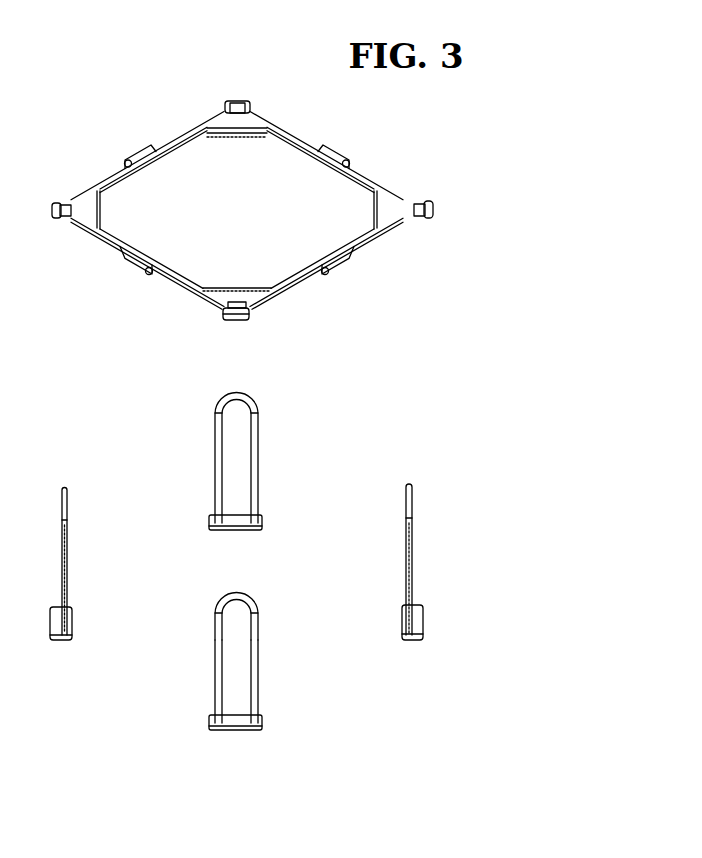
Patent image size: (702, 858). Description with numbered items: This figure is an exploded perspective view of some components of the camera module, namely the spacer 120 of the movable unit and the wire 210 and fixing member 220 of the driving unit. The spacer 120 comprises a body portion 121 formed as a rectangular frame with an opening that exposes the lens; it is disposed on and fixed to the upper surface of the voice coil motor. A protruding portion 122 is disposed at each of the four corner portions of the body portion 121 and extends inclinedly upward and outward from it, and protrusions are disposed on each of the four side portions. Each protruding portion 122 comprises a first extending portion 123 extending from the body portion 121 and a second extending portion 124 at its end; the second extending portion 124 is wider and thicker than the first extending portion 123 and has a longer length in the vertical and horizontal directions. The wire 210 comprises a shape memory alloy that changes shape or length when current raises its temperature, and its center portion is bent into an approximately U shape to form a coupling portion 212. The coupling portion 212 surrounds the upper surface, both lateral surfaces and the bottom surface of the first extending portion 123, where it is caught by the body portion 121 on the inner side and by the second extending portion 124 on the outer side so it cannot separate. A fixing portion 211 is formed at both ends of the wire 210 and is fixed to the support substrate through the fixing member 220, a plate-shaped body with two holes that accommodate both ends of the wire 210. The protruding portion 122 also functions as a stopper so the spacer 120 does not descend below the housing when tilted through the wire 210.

The spacer 120 is at (436, 198).
The body portion 121 is at (388, 202).
The protruding portion 122 is at (518, 257).
The first extending portion 123 is at (410, 218).
The second extending portion 124 is at (422, 213).
The wire 210 is at (407, 541).
The fixing portion 211 is at (250, 731).
The coupling portion 212 is at (227, 596).
The fixing member 220 is at (403, 612).